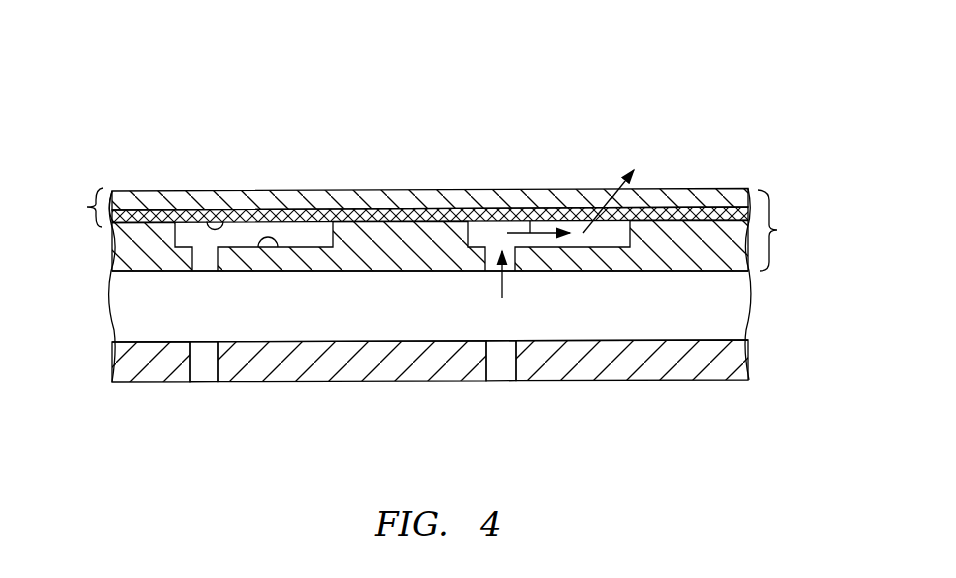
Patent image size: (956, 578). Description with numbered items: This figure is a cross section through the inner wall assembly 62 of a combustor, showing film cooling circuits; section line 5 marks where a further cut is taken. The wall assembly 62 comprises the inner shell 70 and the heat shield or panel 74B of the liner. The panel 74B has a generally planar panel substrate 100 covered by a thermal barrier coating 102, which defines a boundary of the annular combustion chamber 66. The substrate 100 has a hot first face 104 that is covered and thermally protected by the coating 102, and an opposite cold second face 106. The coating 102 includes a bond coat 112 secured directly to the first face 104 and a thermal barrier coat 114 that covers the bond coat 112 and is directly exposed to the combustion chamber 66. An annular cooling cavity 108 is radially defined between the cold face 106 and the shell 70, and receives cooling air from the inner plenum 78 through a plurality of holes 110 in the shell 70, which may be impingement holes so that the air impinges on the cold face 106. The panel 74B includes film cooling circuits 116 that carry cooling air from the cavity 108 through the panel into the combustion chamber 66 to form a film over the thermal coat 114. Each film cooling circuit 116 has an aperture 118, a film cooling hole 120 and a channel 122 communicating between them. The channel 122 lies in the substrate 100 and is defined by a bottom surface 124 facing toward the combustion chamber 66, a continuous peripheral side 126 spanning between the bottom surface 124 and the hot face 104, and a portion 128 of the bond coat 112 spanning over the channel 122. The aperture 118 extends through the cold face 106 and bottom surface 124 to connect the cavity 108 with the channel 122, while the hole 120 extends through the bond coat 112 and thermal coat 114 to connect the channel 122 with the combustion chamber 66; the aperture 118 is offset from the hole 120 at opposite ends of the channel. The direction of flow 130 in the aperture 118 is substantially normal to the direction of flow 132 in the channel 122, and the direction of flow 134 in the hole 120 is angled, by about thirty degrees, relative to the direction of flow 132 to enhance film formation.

The inner wall assembly 62 is at (740, 86).
The annular combustion chamber 66 is at (525, 138).
The inner shell 70 is at (620, 367).
The heat shield or panel 74B is at (795, 230).
The inner plenum 78 is at (341, 443).
The panel substrate 100 is at (710, 193).
The thermal barrier coating 102 is at (70, 207).
The first face 104 is at (735, 212).
The second face 106 is at (643, 271).
The annular cooling cavity 108 is at (418, 313).
The holes 110 is at (205, 368).
The bond coat 112 is at (135, 212).
The thermal barrier coat 114 is at (165, 192).
The film cooling circuit 116 is at (312, 162).
The aperture 118 is at (205, 262).
The film cooling hole 120 is at (318, 202).
The channel 122 is at (252, 237).
The bottom surface 124 is at (277, 250).
The peripheral side 126 is at (314, 232).
The portion of the bond coat 128 is at (220, 224).
The direction of flow in the aperture 130 is at (502, 288).
The direction of flow in the channel 132 is at (530, 220).
The direction of flow in the hole 134 is at (603, 228).
The section line 5 is at (478, 152).